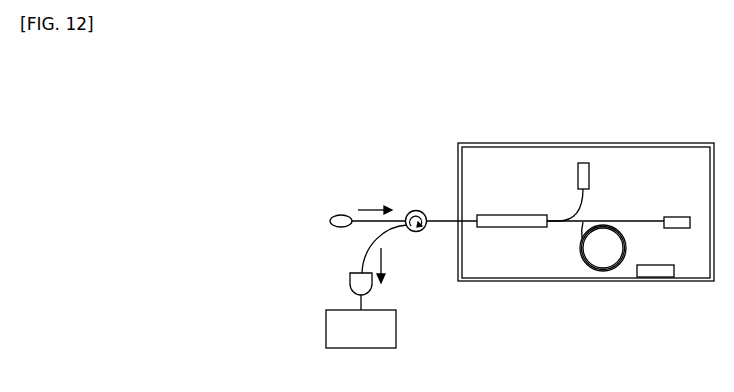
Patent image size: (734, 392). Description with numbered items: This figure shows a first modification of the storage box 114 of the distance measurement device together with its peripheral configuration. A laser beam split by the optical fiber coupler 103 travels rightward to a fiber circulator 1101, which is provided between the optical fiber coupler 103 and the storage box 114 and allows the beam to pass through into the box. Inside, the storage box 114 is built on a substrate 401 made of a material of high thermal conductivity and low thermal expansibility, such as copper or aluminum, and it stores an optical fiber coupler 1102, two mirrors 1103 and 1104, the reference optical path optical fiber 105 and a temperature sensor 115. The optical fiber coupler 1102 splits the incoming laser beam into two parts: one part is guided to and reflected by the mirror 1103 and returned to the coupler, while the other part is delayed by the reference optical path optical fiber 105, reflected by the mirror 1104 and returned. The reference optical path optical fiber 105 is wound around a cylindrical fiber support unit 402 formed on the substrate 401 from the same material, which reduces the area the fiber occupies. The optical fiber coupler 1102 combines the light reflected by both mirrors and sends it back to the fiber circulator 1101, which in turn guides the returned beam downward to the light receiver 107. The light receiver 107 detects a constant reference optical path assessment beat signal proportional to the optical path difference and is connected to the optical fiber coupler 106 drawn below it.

The optical fiber coupler 103 is at (340, 215).
The fiber circulator 1101 is at (419, 211).
The storage box 114 is at (470, 111).
The substrate 401 is at (528, 153).
The optical fiber coupler 1102 is at (512, 210).
The mirror 1103 is at (588, 163).
The mirror 1104 is at (679, 215).
The fiber support unit 402 is at (598, 246).
The reference optical path optical fiber 105 is at (610, 273).
The temperature sensor 115 is at (661, 278).
The light receiver 107 is at (352, 285).
The optical fiber coupler 106 is at (350, 342).